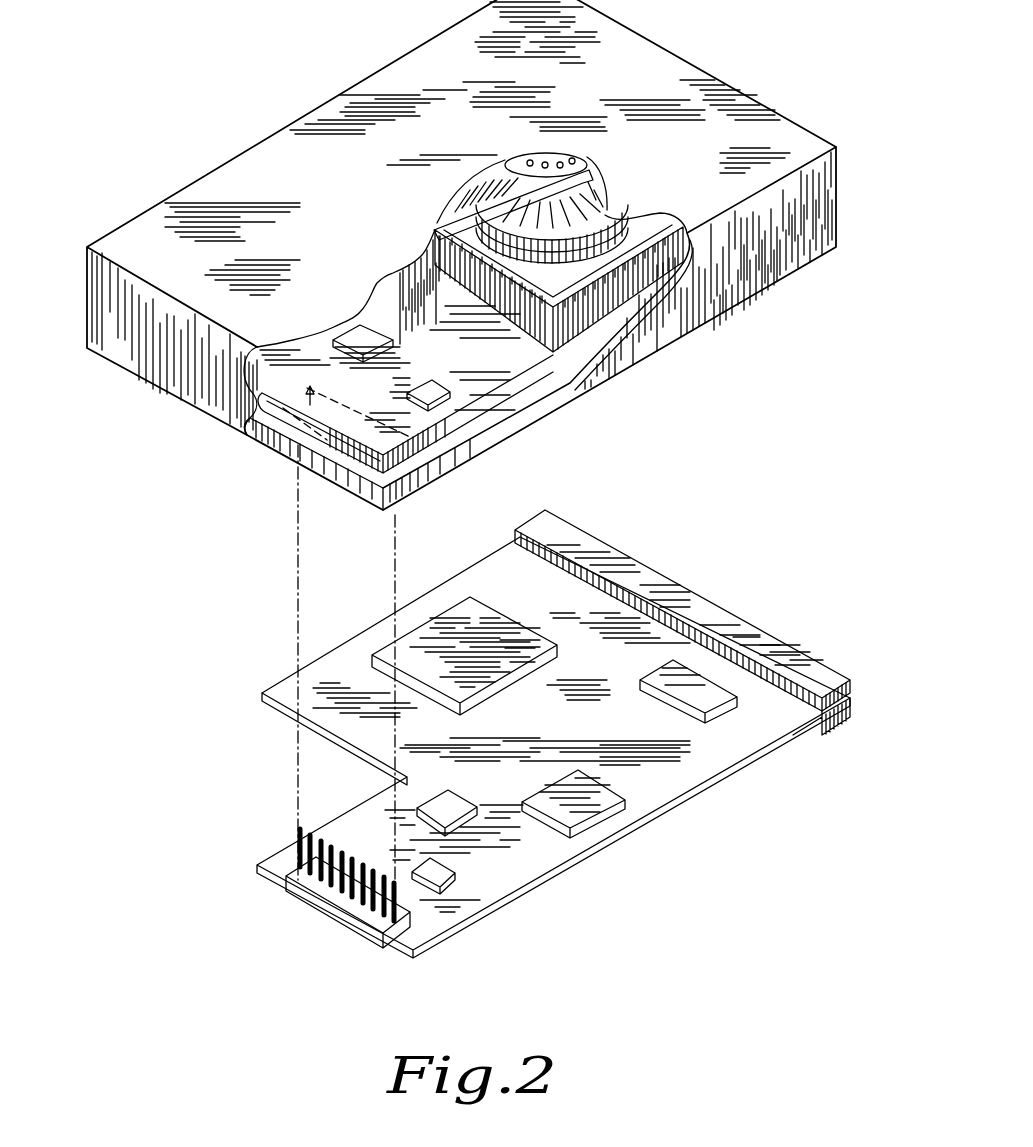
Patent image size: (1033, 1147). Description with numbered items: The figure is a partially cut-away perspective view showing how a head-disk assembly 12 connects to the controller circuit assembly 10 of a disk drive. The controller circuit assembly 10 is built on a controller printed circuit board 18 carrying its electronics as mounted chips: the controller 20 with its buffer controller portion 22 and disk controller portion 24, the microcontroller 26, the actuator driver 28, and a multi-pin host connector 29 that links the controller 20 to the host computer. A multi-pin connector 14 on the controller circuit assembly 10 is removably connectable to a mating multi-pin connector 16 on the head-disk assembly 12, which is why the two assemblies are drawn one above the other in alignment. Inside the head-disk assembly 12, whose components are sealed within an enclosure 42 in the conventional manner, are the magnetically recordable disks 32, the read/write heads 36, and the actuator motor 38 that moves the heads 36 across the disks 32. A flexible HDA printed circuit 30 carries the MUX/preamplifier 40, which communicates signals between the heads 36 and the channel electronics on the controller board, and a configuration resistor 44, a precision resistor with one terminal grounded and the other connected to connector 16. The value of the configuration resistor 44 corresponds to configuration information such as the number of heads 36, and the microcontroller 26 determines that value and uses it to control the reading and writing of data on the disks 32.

The controller circuit assembly 10 is at (712, 907).
The head-disk assembly 12 is at (350, 52).
The multi-pin connector 14 is at (310, 895).
The multi-pin connector 16 is at (272, 425).
The controller printed circuit board 18 is at (465, 926).
The controller 20 is at (717, 688).
The buffer controller portion 22 is at (453, 645).
The disk controller portion 24 is at (445, 808).
The microcontroller 26 is at (625, 795).
The actuator driver 28 is at (462, 868).
The multi-pin host connector 29 is at (703, 613).
The flexible HDA printed circuit 30 is at (280, 400).
The magnetically recordable disks 32 is at (600, 223).
The read/write heads 36 is at (588, 218).
The actuator motor 38 is at (423, 227).
The MUX/preamplifier 40 is at (363, 335).
The enclosure 42 is at (198, 290).
The configuration resistor 44 is at (440, 375).